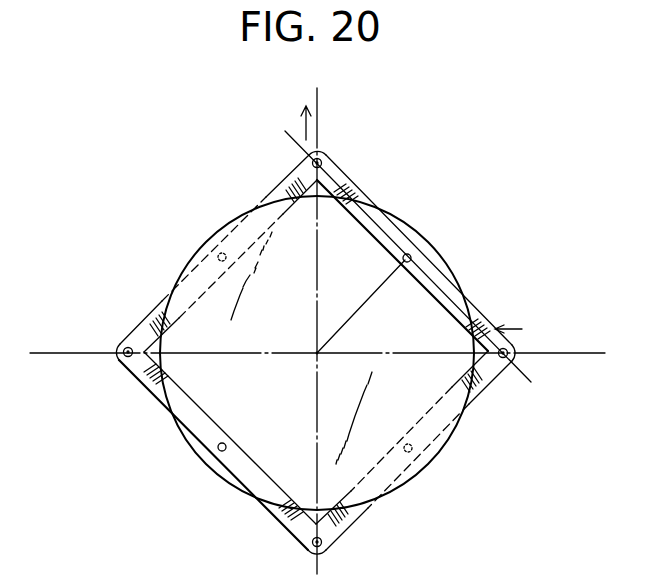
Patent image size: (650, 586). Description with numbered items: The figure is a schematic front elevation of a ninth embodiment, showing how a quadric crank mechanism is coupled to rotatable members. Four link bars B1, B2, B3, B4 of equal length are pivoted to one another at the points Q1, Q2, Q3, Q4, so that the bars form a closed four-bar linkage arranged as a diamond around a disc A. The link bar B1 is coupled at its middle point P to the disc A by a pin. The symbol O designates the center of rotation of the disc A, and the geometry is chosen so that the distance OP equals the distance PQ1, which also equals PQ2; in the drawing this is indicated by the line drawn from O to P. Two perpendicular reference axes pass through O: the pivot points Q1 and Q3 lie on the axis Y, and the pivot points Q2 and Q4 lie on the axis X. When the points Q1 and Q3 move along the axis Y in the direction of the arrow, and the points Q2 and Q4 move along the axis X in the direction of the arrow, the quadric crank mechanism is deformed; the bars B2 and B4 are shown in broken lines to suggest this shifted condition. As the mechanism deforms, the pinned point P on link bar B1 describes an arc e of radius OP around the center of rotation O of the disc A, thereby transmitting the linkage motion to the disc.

The disc A is at (261, 412).
The link bar B1 is at (350, 182).
The link bar B2 is at (487, 386).
The link bar B3 is at (273, 517).
The link bar B4 is at (158, 317).
The pivot point Q1 is at (328, 149).
The pivot point Q2 is at (520, 343).
The pivot point Q3 is at (329, 559).
The pivot point Q4 is at (112, 341).
The middle point P is at (380, 287).
The arc e is at (372, 224).
The center of rotation O is at (308, 364).
The axis X— X is at (324, 353).
The axis Y— Y is at (315, 332).